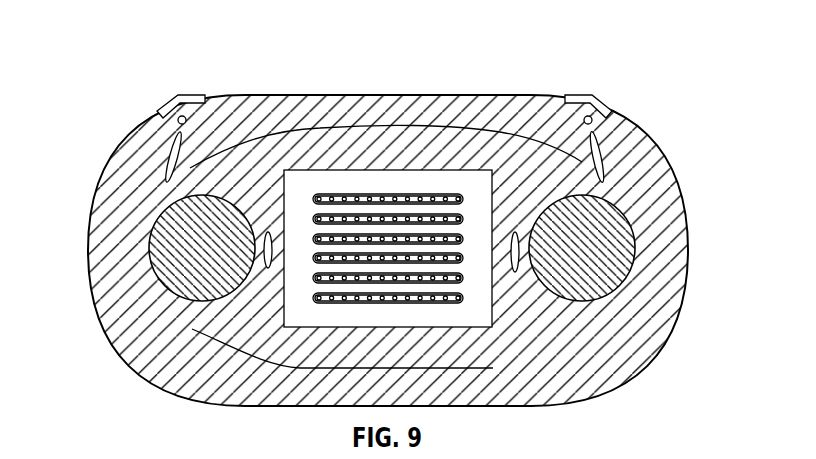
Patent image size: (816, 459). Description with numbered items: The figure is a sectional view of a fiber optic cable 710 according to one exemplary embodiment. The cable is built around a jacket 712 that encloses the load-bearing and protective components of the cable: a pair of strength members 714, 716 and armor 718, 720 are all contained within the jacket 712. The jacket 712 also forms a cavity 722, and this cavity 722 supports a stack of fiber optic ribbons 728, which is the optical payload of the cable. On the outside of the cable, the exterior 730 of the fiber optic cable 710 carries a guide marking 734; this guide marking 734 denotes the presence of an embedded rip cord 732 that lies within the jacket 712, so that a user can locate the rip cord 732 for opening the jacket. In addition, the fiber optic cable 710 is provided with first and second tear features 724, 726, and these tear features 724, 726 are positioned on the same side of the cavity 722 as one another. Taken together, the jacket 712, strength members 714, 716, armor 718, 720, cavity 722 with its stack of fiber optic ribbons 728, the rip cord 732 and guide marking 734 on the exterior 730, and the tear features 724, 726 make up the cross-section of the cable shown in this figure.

The fiber optic cable 710 is at (737, 95).
The jacket 712 is at (633, 337).
The strength member 714 is at (594, 257).
The strength member 716 is at (198, 247).
The armor 718 is at (453, 128).
The armor 720 is at (493, 368).
The cavity 722 is at (303, 322).
The first tear feature 724 is at (258, 248).
The second tear feature 726 is at (178, 167).
The stack of fiber optic ribbons 728 is at (372, 217).
The exterior 730 is at (262, 90).
The rip cord 732 is at (172, 118).
The guide marking 734 is at (200, 93).